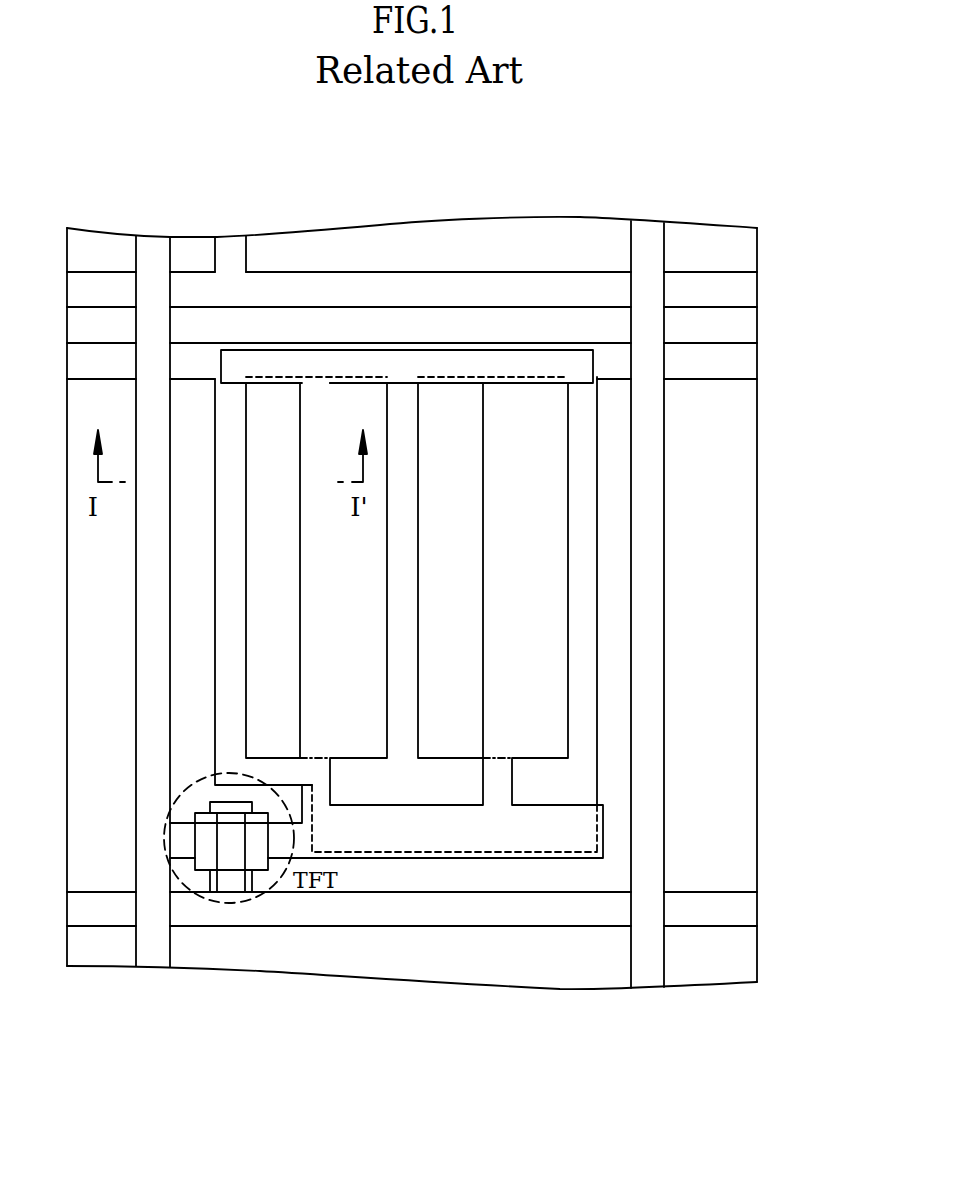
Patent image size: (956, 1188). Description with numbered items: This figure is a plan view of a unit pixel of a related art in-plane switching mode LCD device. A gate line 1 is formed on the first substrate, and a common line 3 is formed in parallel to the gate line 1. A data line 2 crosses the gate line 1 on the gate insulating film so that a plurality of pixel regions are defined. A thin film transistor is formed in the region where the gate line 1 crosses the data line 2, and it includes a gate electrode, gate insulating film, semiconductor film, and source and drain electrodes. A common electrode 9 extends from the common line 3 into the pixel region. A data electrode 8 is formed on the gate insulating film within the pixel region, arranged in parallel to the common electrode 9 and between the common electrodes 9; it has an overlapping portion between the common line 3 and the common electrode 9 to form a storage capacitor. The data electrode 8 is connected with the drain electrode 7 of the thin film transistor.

The gate line 1 is at (727, 292).
The data line 2 is at (148, 946).
The common line 3 is at (727, 358).
The drain electrode 7 is at (260, 847).
The data electrode 8 is at (496, 450).
The common electrode 9 is at (584, 497).